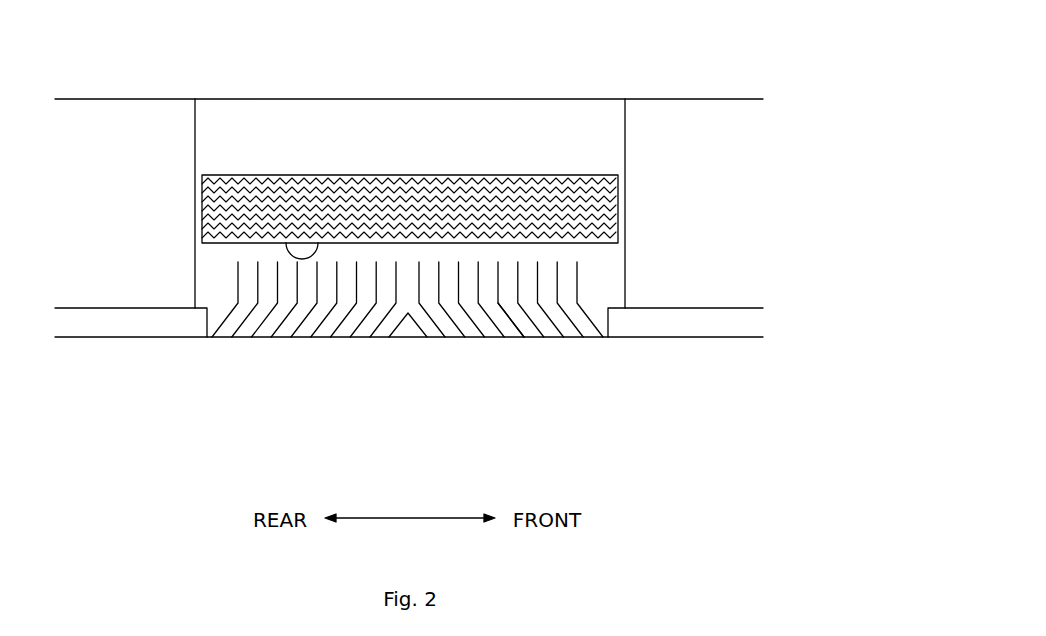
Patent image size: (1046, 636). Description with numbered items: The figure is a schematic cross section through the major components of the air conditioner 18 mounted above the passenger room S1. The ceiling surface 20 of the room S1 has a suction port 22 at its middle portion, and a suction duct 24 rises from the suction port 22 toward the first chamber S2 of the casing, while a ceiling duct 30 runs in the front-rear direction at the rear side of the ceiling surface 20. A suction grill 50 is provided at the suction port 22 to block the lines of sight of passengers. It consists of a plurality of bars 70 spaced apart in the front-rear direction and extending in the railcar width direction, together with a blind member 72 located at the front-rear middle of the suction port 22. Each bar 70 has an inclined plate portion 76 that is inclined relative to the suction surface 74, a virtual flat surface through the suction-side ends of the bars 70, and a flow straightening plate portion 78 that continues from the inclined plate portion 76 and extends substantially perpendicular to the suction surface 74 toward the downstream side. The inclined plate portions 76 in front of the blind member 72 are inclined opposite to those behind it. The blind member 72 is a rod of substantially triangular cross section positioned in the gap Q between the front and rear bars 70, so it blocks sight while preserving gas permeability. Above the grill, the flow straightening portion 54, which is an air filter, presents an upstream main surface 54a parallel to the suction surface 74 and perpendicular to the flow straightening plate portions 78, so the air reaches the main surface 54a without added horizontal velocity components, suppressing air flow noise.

The air conditioner 18 is at (162, 31).
The first chamber S2 is at (325, 57).
The room S1 is at (627, 421).
The ceiling duct 30 is at (688, 115).
The suction duct 24 is at (193, 275).
The ceiling surface 20 is at (722, 340).
The flow straightening portion 54 is at (407, 173).
The upstream main surface 54a is at (286, 243).
The bar 70 is at (485, 322).
The flow straightening plate portion 78 is at (492, 304).
The inclined plate portion 76 is at (514, 324).
The blind member 72 is at (410, 337).
The suction surface 74 is at (568, 340).
The suction grill 50 is at (241, 339).
The suction port 22 is at (292, 347).
The gap Q is at (379, 342).